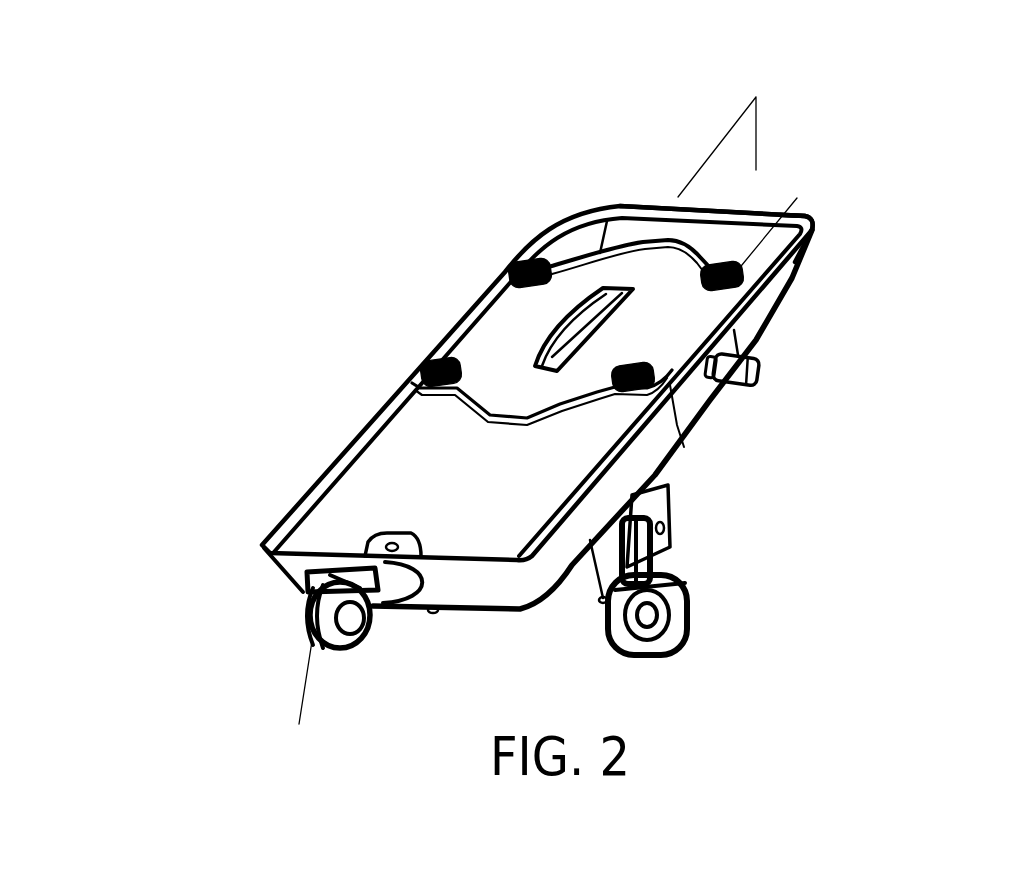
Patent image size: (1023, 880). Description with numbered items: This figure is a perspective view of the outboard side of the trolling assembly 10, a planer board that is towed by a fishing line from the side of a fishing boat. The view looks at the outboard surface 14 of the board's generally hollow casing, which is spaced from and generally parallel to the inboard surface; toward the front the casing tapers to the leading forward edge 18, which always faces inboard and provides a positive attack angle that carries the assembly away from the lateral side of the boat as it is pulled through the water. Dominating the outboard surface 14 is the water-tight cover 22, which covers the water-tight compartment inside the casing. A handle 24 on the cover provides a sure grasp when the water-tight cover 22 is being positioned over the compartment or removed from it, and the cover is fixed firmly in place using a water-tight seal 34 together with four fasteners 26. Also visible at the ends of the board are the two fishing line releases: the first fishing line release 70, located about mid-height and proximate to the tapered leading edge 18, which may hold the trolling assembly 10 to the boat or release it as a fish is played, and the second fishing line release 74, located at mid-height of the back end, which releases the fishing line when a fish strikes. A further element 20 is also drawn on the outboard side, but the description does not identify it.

The trolling assembly 10 is at (170, 261).
The outboard surface 14 is at (615, 450).
The leading forward edge 18 is at (663, 208).
The latch pin 20 is at (762, 367).
The water-tight cover 22 is at (481, 312).
The handle 24 is at (572, 300).
The fasteners 26 is at (797, 193).
The water-tight seal 34 is at (465, 403).
The first fishing line release 70 is at (680, 627).
The second fishing line release 74 is at (300, 618).